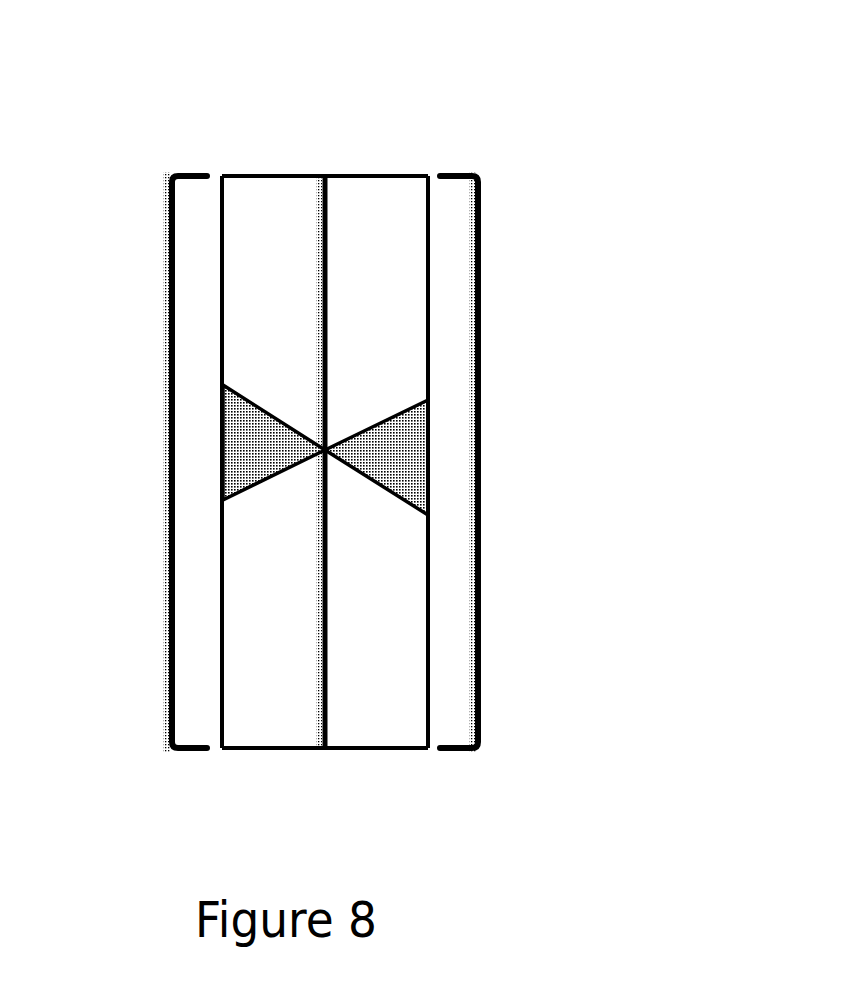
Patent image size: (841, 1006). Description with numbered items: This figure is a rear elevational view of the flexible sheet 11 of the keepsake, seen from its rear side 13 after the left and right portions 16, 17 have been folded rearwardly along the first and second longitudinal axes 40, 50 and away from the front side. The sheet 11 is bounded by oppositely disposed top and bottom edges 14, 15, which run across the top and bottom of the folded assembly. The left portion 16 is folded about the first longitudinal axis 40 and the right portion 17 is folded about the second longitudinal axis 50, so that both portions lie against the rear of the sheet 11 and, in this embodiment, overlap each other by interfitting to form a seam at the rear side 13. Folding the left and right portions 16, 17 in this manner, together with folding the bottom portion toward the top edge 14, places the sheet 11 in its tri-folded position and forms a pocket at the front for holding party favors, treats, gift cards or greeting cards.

The flexible sheet 11 is at (346, 431).
The rear side 13 is at (205, 358).
The top edge 14 is at (342, 170).
The bottom edge 15 is at (378, 754).
The left portion 16 is at (478, 455).
The right portion 17 is at (172, 455).
The first longitudinal axis 40 is at (428, 350).
The second longitudinal axis 50 is at (222, 554).